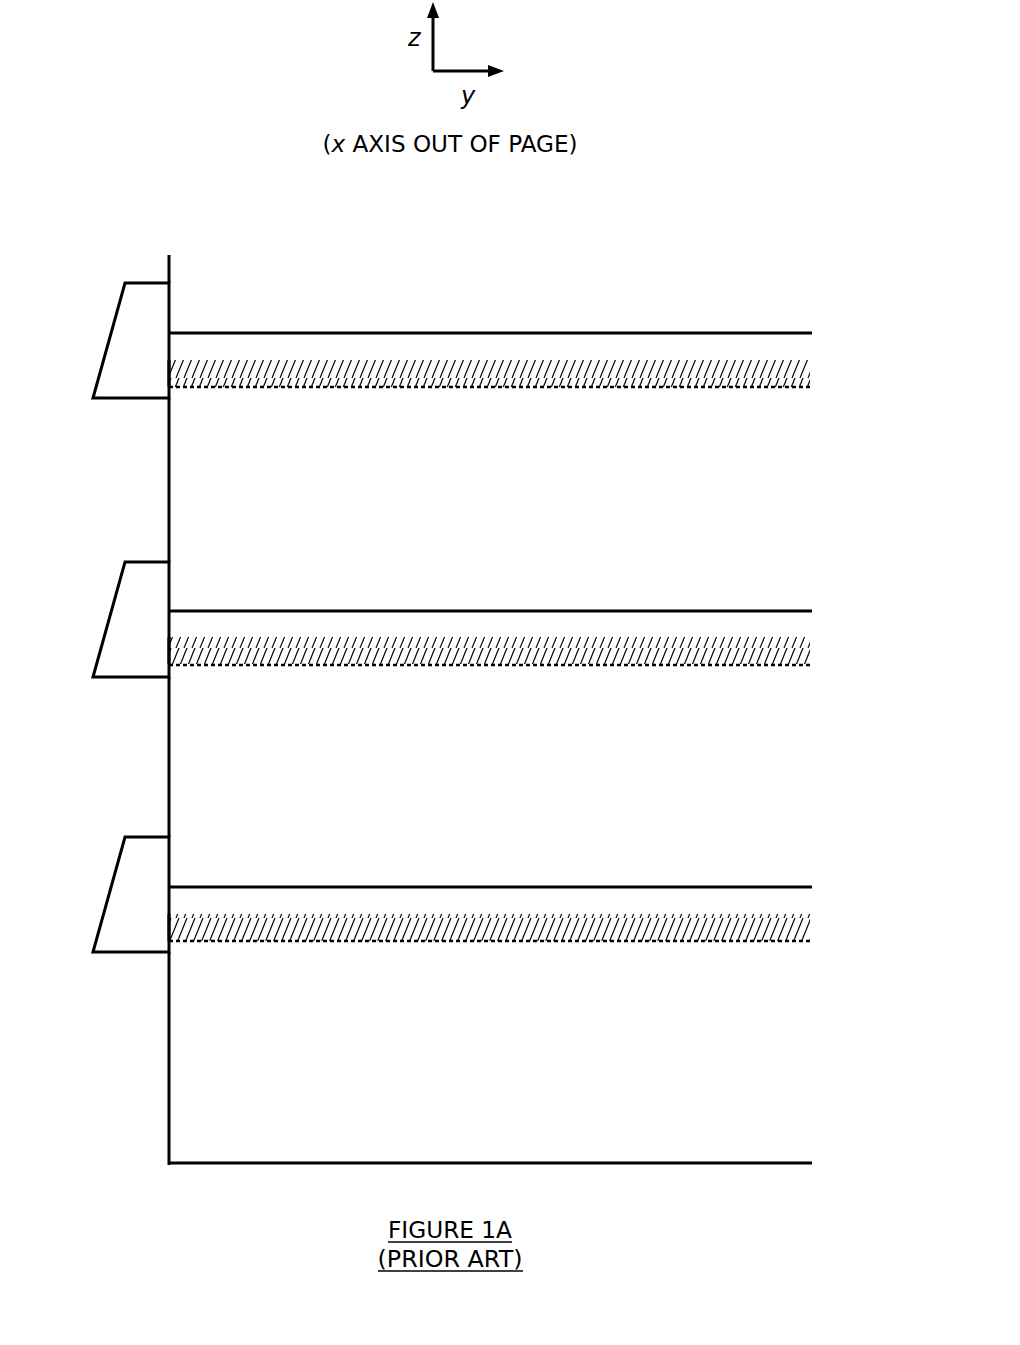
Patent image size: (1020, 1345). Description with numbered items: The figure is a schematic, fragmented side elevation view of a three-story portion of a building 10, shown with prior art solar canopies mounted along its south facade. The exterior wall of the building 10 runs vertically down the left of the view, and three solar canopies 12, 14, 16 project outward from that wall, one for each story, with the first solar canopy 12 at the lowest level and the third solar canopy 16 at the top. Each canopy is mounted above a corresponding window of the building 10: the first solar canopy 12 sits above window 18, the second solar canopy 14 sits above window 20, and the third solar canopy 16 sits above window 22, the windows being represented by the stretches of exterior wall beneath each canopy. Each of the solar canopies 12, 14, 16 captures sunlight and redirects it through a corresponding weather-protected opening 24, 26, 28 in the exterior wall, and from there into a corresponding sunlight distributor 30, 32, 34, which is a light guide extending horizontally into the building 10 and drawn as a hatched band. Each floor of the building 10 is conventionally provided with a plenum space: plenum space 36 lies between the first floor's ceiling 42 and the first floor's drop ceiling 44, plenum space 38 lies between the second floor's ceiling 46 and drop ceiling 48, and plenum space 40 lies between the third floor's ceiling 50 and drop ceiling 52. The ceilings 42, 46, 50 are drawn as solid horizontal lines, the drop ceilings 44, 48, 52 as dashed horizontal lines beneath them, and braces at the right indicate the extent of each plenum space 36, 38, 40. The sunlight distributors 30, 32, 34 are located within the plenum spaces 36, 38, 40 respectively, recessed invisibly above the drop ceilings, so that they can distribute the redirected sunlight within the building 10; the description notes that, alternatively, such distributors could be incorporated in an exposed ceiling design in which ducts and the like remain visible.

The building 10 is at (169, 259).
The solar canopy 12 is at (118, 855).
The solar canopy 14 is at (118, 580).
The solar canopy 16 is at (118, 301).
The window 18 is at (167, 982).
The window 20 is at (167, 708).
The window 22 is at (167, 430).
The weather-protected opening 24 is at (169, 927).
The weather-protected opening 26 is at (169, 652).
The weather-protected opening 28 is at (169, 374).
The sunlight distributor 30 is at (292, 916).
The sunlight distributor 32 is at (292, 639).
The sunlight distributor 34 is at (292, 362).
The plenum space 36 is at (503, 919).
The plenum space 38 is at (503, 639).
The plenum space 40 is at (503, 363).
The ceiling 42 is at (599, 887).
The drop ceiling 44 is at (692, 943).
The ceiling 46 is at (593, 610).
The drop ceiling 48 is at (690, 666).
The ceiling 50 is at (599, 333).
The drop ceiling 52 is at (692, 388).